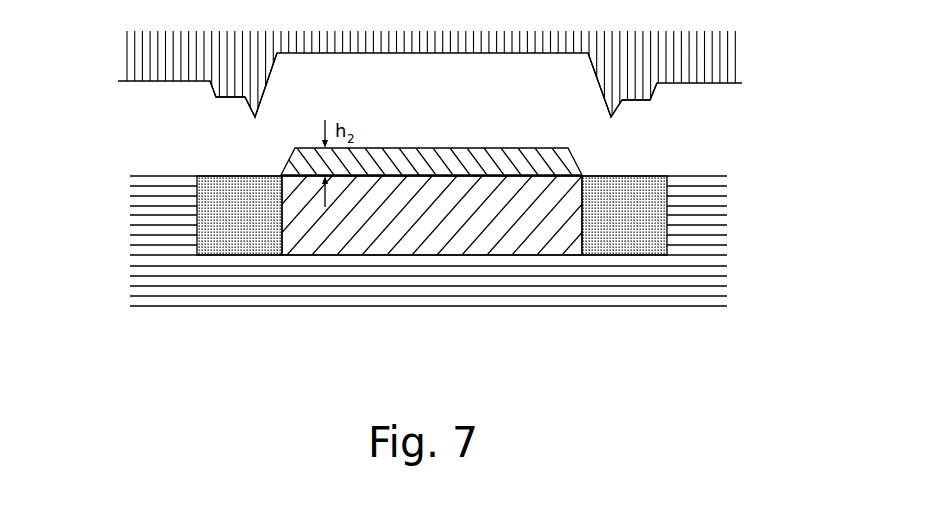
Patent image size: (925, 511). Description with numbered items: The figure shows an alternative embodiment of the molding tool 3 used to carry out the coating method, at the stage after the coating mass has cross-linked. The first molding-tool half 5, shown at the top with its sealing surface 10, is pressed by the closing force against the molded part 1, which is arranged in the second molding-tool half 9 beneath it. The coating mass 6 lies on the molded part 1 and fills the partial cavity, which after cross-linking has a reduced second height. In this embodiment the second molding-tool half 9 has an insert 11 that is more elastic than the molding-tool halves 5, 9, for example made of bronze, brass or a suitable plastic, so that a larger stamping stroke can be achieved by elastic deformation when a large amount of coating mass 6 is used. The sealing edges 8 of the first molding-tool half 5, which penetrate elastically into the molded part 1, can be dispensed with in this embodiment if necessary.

The molded part 1 is at (333, 245).
The molding tool 3 is at (70, 113).
The first molding-tool half 5 is at (140, 50).
The coating mass 6 is at (495, 168).
The sealing edge 8 is at (250, 102).
The second molding-tool half 9 is at (720, 258).
The sealing surface 10 is at (225, 99).
The insert 11 is at (188, 261).